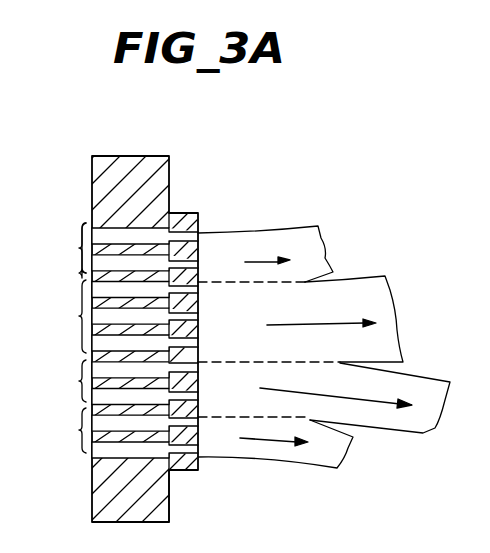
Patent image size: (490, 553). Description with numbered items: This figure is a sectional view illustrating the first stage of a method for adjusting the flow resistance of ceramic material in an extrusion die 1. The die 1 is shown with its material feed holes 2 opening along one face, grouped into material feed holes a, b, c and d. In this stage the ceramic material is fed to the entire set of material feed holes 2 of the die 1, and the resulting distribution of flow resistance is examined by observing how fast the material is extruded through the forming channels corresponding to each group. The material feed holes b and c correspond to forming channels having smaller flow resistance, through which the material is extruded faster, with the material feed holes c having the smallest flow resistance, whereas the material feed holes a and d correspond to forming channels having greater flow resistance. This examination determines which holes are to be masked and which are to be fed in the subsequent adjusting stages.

The die 1 is at (102, 163).
The material feed holes 2 is at (117, 234).
The material feed holes a is at (72, 250).
The material feed holes b is at (72, 316).
The material feed holes c is at (72, 381).
The material feed holes d is at (72, 430).